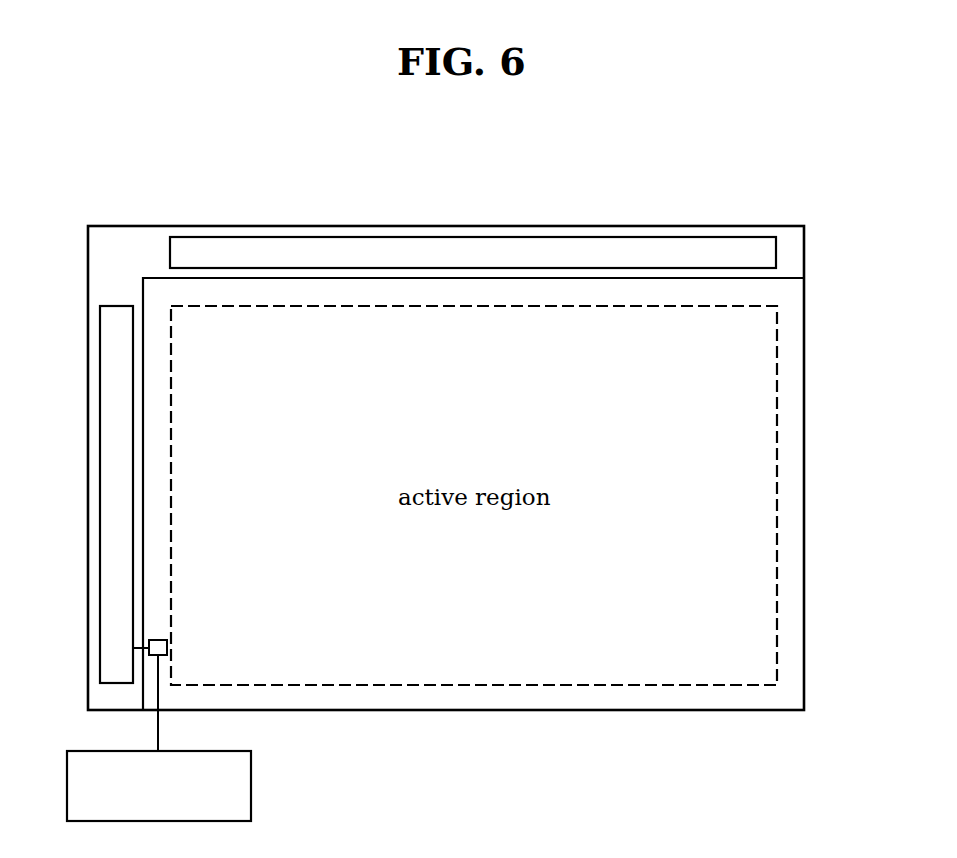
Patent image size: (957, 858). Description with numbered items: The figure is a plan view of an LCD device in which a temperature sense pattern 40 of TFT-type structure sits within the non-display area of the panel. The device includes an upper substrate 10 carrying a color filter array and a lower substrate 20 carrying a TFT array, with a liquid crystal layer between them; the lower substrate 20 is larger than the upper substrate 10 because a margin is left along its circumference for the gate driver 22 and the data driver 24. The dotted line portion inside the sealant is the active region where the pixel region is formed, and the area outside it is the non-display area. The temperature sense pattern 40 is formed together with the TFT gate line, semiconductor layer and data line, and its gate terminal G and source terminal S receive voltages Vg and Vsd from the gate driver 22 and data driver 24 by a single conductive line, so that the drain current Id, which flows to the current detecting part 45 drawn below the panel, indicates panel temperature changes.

The upper substrate 10 is at (795, 298).
The lower substrate 20 is at (657, 232).
The gate driver 22 is at (105, 335).
The data driver 24 is at (577, 248).
The temperature sense pattern 40 is at (158, 640).
The current detecting part 45 is at (241, 782).